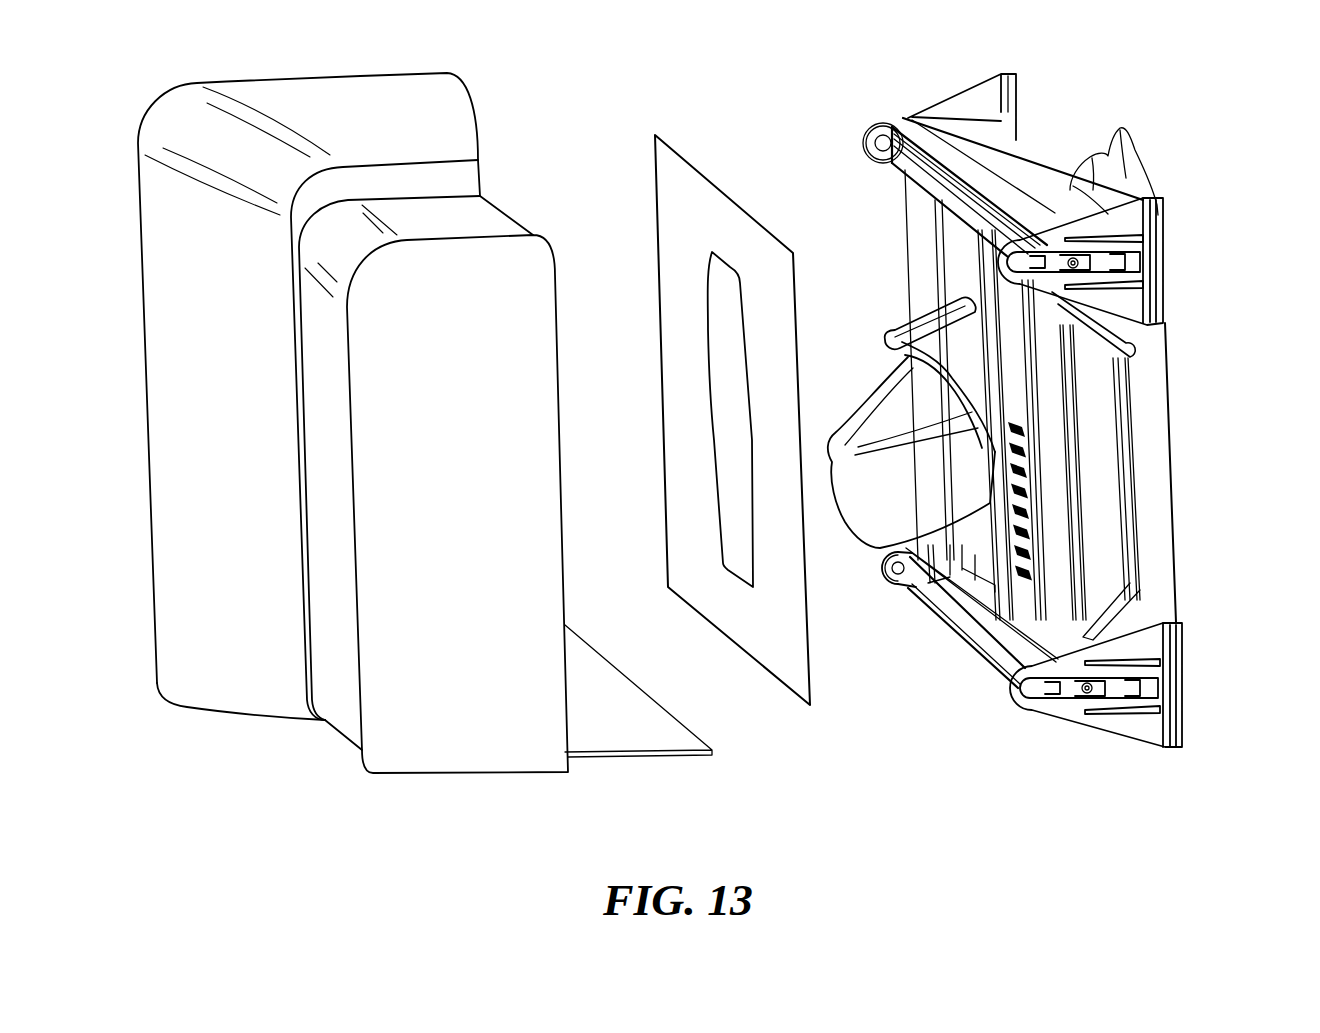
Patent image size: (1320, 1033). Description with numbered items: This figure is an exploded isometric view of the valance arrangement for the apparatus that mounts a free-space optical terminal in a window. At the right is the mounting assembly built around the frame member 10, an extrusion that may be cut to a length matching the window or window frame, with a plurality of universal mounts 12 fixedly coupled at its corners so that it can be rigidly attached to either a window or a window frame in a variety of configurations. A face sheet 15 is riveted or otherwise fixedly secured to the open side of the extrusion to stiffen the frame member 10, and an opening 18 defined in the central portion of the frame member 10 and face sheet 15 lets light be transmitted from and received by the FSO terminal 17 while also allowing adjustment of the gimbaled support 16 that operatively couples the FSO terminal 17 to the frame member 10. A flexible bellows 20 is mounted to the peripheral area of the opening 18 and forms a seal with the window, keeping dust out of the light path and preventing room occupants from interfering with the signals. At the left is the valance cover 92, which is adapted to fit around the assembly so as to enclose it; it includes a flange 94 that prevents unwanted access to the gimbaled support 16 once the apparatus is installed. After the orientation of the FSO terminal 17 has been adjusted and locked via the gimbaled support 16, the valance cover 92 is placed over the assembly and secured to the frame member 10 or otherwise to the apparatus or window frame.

The frame member 10 is at (1020, 165).
The universal mounts 12 is at (933, 93).
The face sheet 15 is at (728, 212).
The gimbaled support 16 is at (878, 363).
The FSO terminal 17 is at (865, 518).
The opening 18 is at (730, 325).
The flexible bellows 20 is at (1122, 162).
The valance cover 92 is at (457, 130).
The flange 94 is at (640, 745).